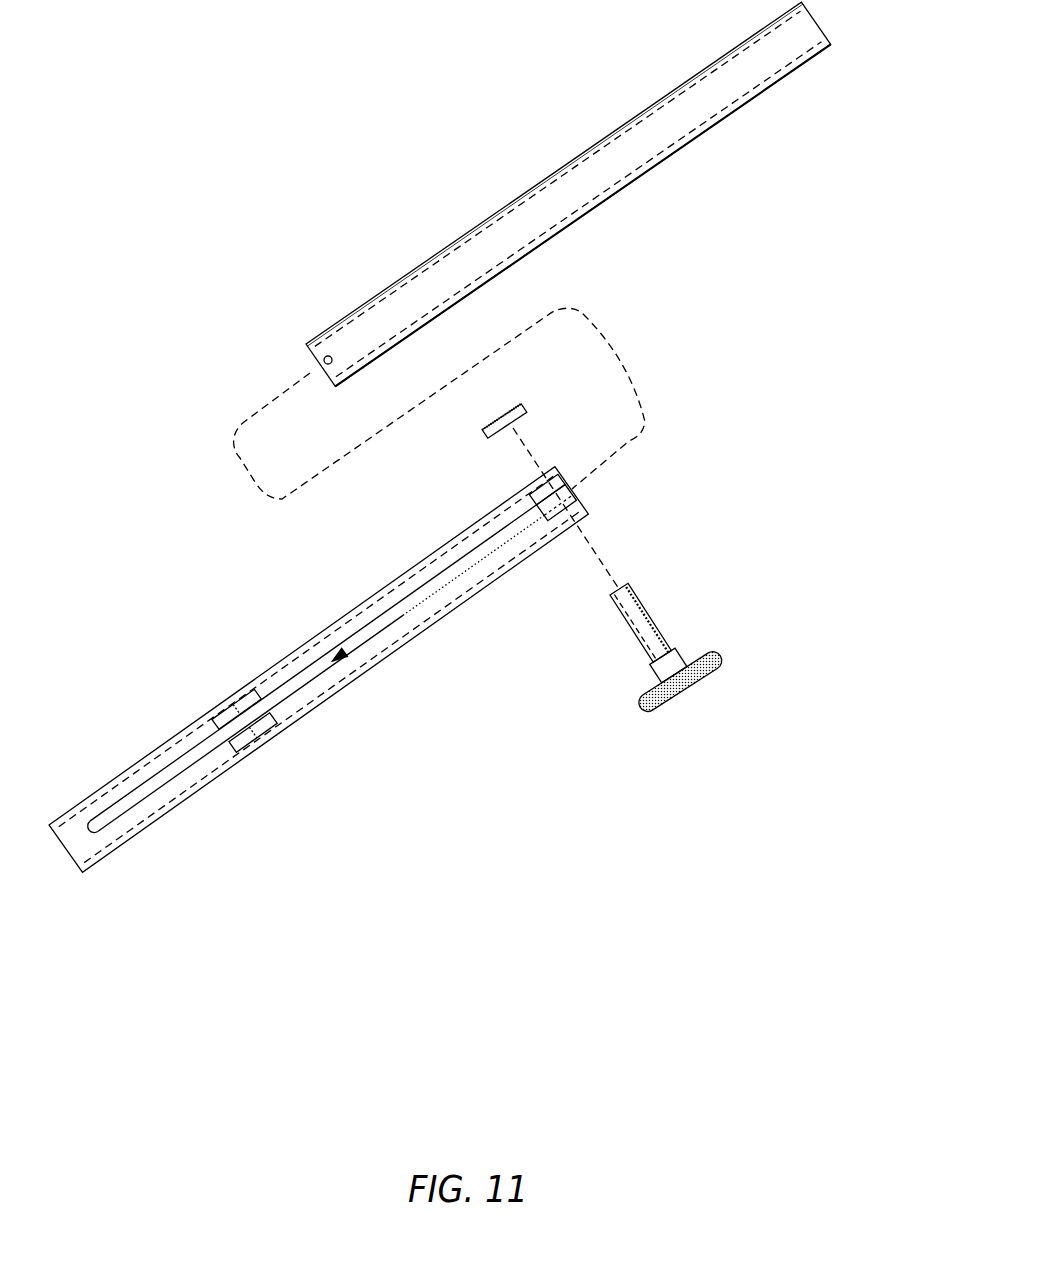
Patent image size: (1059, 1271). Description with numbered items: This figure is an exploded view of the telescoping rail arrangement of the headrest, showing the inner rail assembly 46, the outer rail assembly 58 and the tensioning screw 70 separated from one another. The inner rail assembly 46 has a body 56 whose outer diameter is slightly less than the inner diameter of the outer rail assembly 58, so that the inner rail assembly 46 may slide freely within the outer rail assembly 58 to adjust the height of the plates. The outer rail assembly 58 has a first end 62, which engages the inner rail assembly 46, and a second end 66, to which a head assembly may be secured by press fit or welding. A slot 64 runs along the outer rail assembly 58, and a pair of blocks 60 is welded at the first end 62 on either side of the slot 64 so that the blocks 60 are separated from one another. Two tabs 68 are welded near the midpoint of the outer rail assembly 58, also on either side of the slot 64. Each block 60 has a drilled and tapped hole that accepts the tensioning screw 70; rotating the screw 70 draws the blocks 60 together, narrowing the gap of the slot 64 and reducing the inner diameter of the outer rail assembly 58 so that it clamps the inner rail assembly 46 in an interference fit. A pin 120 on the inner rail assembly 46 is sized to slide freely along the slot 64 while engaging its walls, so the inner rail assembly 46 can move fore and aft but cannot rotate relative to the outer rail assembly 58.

The inner rail assembly 46 is at (737, 47).
The body 56 is at (650, 128).
The pin 120 is at (325, 358).
The tensioning screw 70 is at (483, 432).
The blocks 60 is at (565, 480).
The first end 62 is at (587, 512).
The slot 64 is at (342, 655).
The tabs 68 is at (260, 695).
The outer rail assembly 58 is at (168, 795).
The second end 66 is at (78, 857).